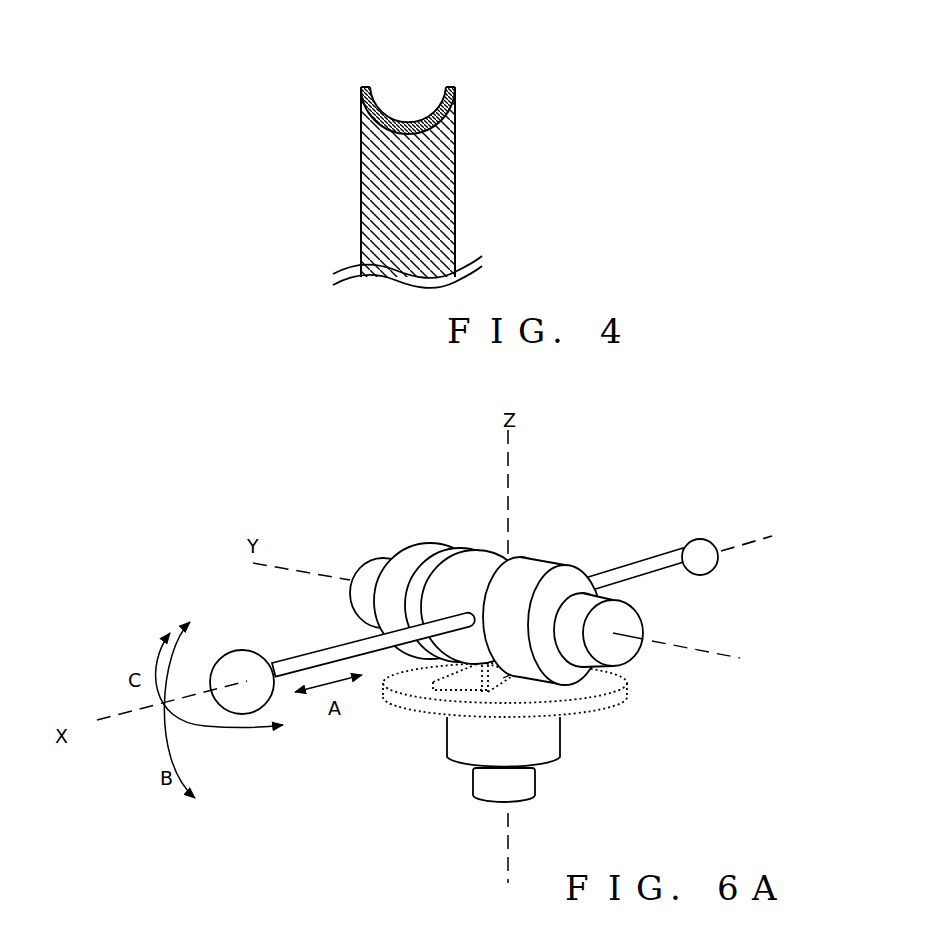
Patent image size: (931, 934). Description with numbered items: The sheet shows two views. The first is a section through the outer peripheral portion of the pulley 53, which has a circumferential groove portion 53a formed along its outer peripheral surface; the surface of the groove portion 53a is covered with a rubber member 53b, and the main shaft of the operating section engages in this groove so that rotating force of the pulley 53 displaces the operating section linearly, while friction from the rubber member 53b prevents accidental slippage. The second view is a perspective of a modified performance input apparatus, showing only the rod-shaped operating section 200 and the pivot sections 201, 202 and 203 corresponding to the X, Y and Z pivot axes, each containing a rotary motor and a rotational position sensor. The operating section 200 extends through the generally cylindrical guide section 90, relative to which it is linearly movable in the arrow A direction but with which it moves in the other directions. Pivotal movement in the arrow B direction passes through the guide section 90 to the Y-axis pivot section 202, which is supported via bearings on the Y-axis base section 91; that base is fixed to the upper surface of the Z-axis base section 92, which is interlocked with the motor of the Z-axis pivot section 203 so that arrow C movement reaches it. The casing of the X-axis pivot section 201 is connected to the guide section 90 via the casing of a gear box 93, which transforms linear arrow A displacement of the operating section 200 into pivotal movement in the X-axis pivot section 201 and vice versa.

In FIG. 4, the pulley 53 is at (360, 187).
In FIG. 4, the groove portion 53a is at (397, 120).
In FIG. 4, the rubber member 53b is at (432, 110).
In FIG. 6A, the guide section 90 is at (478, 580).
In FIG. 6A, the Y-axis base section 91 is at (482, 672).
In FIG. 6A, the Z-axis base section 92 is at (590, 710).
In FIG. 6A, the gear box 93 is at (460, 548).
In FIG. 6A, the operating section 200 is at (312, 652).
In FIG. 6A, the X-axis pivot section 201 is at (393, 557).
In FIG. 6A, the Y-axis pivot section 202 is at (620, 590).
In FIG. 6A, the Z-axis pivot section 203 is at (460, 765).